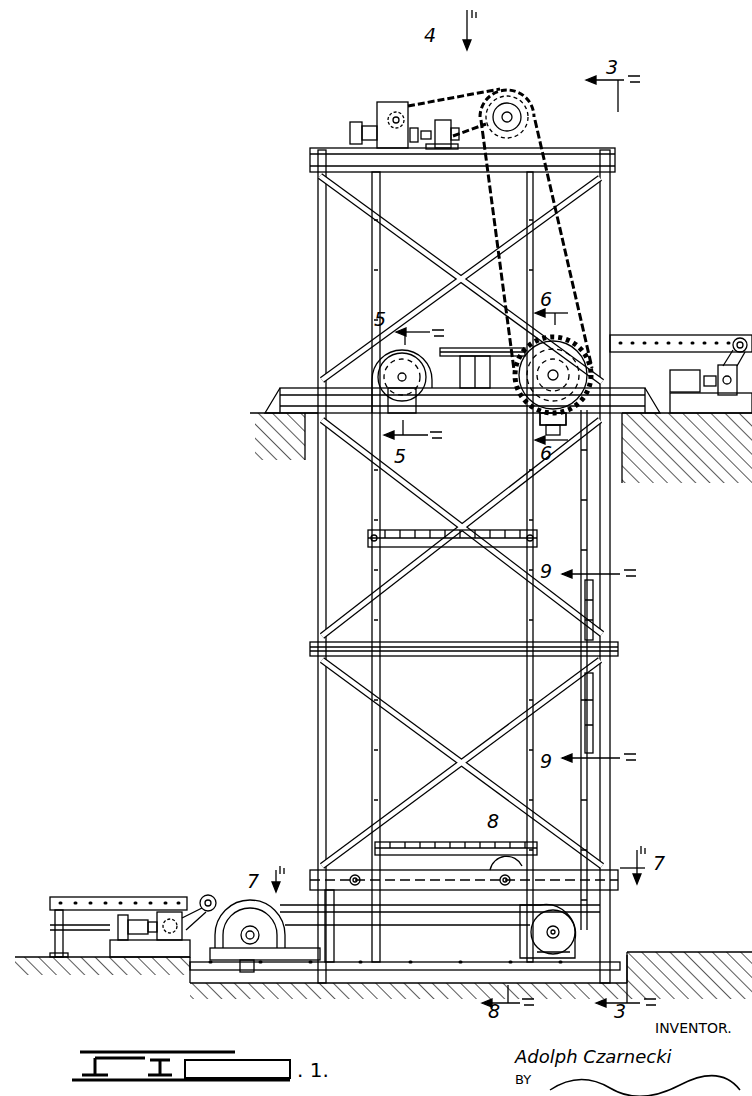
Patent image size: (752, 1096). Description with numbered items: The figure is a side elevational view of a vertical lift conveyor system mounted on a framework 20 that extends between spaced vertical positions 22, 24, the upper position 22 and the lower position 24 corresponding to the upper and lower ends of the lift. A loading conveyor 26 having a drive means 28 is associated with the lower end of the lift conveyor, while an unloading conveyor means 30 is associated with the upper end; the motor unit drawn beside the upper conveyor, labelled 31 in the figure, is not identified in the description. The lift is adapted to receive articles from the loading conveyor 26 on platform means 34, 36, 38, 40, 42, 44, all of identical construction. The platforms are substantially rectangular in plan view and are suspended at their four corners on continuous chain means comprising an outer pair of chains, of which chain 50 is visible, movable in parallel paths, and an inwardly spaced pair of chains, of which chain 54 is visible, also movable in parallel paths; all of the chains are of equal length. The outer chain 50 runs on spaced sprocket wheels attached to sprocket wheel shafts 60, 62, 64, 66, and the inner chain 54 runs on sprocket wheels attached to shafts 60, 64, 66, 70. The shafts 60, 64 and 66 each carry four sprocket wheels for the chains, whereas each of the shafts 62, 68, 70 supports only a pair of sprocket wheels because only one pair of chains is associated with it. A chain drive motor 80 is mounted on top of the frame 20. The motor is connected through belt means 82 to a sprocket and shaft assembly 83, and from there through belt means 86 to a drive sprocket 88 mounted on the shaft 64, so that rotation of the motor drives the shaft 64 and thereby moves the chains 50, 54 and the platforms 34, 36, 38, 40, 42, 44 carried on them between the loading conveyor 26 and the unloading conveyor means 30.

The framework 20 is at (316, 598).
The upper vertical position 22 is at (655, 422).
The lower vertical position 24 is at (45, 957).
The loading conveyor 26 is at (105, 897).
The drive means 28 is at (167, 940).
The unloading conveyor means 30 is at (680, 335).
The upper conveyor drive motor 31 is at (722, 413).
The platform means 34 is at (237, 900).
The platform means 36 is at (455, 842).
The platform means 38 is at (470, 548).
The platform means 40 is at (503, 345).
The platform means 42 is at (594, 618).
The platform means 44 is at (585, 928).
The chain 50 is at (526, 678).
The chain 54 is at (372, 742).
The sprocket wheel shaft 60 is at (250, 940).
The sprocket wheel shaft 62 is at (512, 880).
The sprocket wheel shaft 64 is at (503, 413).
The sprocket wheel shaft 66 is at (545, 930).
The sprocket wheel shaft 68 is at (352, 877).
The sprocket wheel shaft 70 is at (400, 375).
The chain drive motor 80 is at (377, 110).
The belt means 82 is at (466, 100).
The sprocket and shaft assembly 83 is at (515, 108).
The belt means 86 is at (585, 262).
The drive sprocket 88 is at (575, 355).